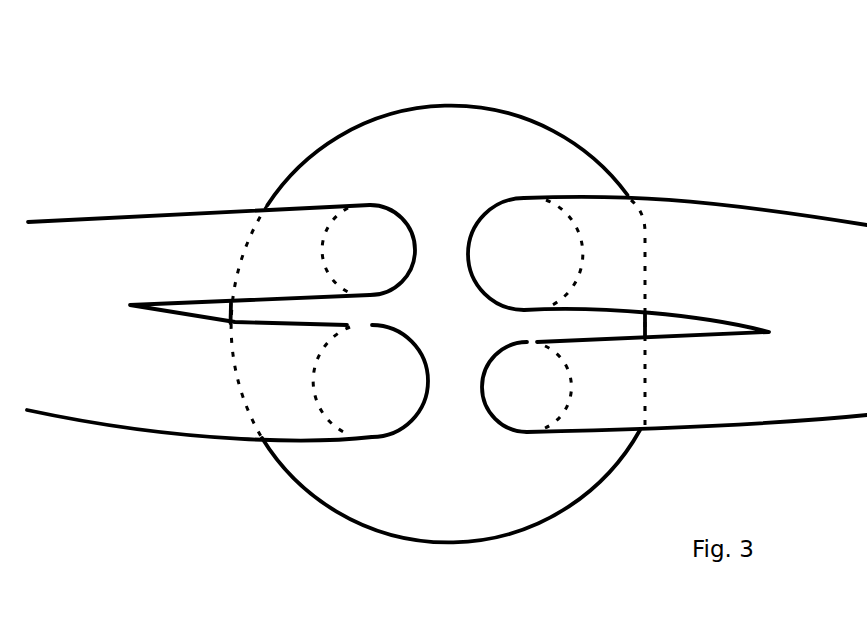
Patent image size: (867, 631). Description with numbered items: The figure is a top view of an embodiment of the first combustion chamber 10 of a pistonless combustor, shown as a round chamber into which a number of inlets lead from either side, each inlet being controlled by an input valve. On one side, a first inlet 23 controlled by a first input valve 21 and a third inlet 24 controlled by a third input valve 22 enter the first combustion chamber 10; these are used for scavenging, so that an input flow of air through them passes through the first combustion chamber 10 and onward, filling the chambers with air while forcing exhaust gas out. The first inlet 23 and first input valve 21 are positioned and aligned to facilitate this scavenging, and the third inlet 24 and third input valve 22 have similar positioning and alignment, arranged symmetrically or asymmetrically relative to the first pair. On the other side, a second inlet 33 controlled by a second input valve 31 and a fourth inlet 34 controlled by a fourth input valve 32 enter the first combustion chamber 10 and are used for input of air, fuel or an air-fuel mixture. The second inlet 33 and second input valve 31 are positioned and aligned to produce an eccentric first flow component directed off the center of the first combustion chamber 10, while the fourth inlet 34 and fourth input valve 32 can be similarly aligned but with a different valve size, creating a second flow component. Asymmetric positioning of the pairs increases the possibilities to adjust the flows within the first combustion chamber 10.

The first combustion chamber 10 is at (445, 193).
The first input valve 21 is at (380, 413).
The third input valve 22 is at (372, 235).
The first inlet 23 is at (190, 397).
The third inlet 24 is at (213, 242).
The second input valve 31 is at (520, 407).
The fourth input valve 32 is at (515, 223).
The second inlet 33 is at (687, 377).
The fourth inlet 34 is at (687, 233).